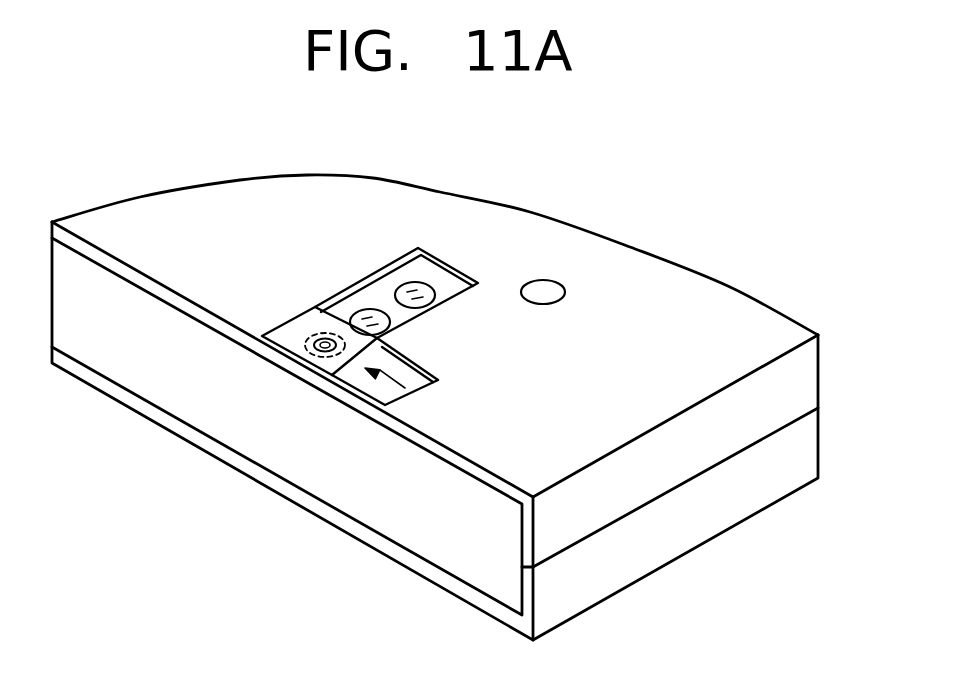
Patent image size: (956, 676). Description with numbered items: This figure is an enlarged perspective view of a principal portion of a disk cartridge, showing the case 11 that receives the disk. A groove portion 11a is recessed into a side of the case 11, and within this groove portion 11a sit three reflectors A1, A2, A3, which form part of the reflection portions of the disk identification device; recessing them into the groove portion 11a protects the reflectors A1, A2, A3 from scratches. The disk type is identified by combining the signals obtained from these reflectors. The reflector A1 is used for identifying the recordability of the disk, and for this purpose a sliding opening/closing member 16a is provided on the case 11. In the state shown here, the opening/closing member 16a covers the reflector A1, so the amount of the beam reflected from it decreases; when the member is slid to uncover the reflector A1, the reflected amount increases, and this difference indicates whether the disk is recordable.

The case 11 is at (735, 312).
The groove portion 11a is at (445, 282).
The opening/closing member 16a is at (313, 320).
The reflector A1 is at (307, 343).
The reflector A2 is at (367, 312).
The reflector A3 is at (412, 287).